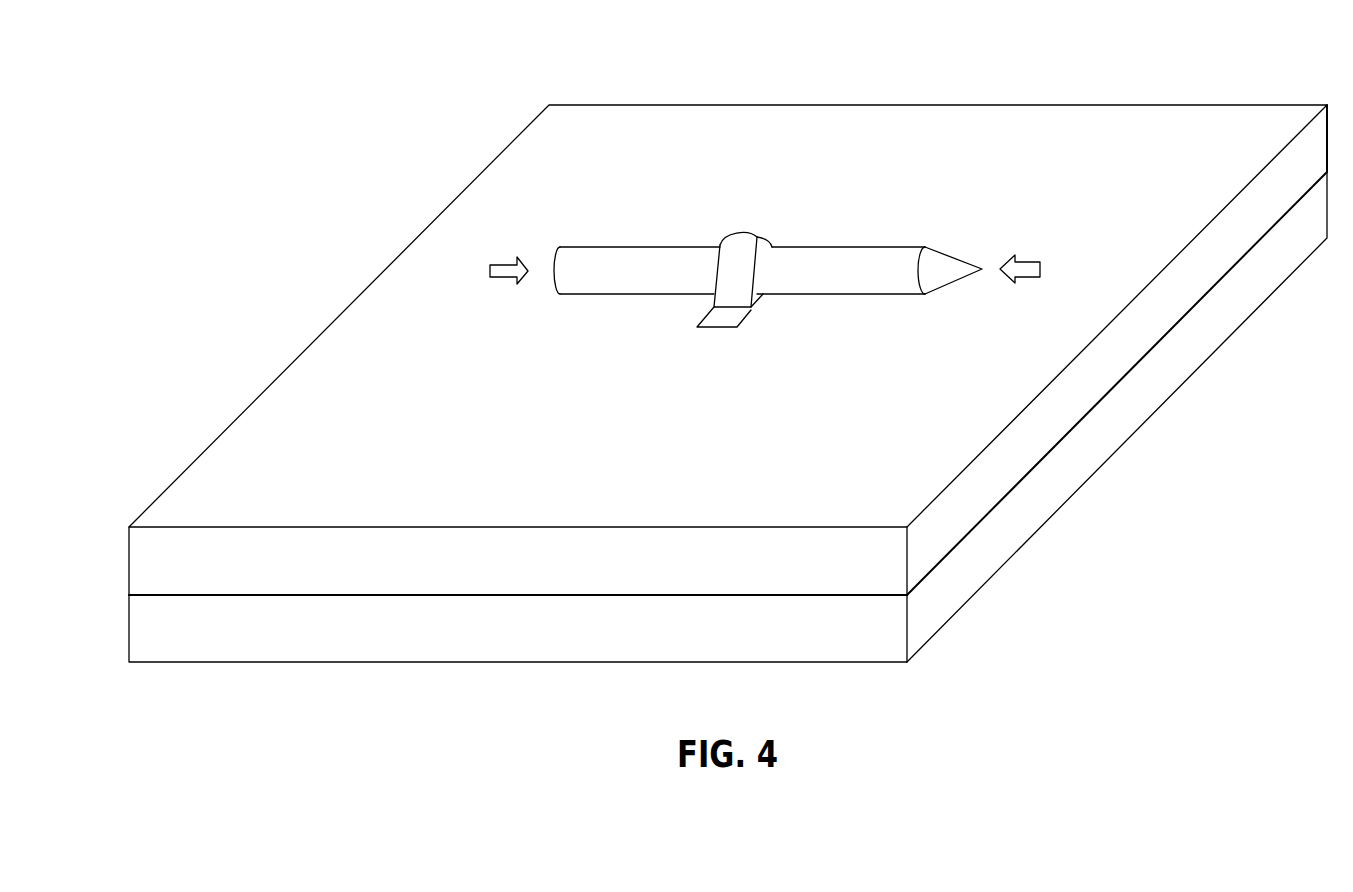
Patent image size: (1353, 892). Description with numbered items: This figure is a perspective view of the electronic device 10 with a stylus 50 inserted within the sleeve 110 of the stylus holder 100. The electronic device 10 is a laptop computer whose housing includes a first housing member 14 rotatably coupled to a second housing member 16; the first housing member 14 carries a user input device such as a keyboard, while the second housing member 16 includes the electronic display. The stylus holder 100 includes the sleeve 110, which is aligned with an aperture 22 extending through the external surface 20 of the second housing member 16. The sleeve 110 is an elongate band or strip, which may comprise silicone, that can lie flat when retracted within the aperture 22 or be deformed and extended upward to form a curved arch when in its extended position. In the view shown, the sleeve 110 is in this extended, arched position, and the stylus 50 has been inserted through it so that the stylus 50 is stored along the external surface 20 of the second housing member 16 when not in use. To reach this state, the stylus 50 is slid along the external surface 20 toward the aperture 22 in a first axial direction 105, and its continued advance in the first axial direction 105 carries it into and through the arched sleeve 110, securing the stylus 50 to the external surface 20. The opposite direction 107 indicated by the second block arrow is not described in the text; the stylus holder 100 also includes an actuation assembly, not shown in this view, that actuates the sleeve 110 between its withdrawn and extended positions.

The electronic device 10 is at (701, 383).
The first housing member 14 is at (148, 628).
The second housing member 16 is at (148, 567).
The external surface 20 is at (200, 492).
The aperture 22 is at (718, 338).
The stylus 50 is at (824, 248).
The stylus holder 100 is at (768, 277).
The first axial direction 105 is at (503, 265).
The second direction 107 is at (1018, 262).
The sleeve 110 is at (740, 238).